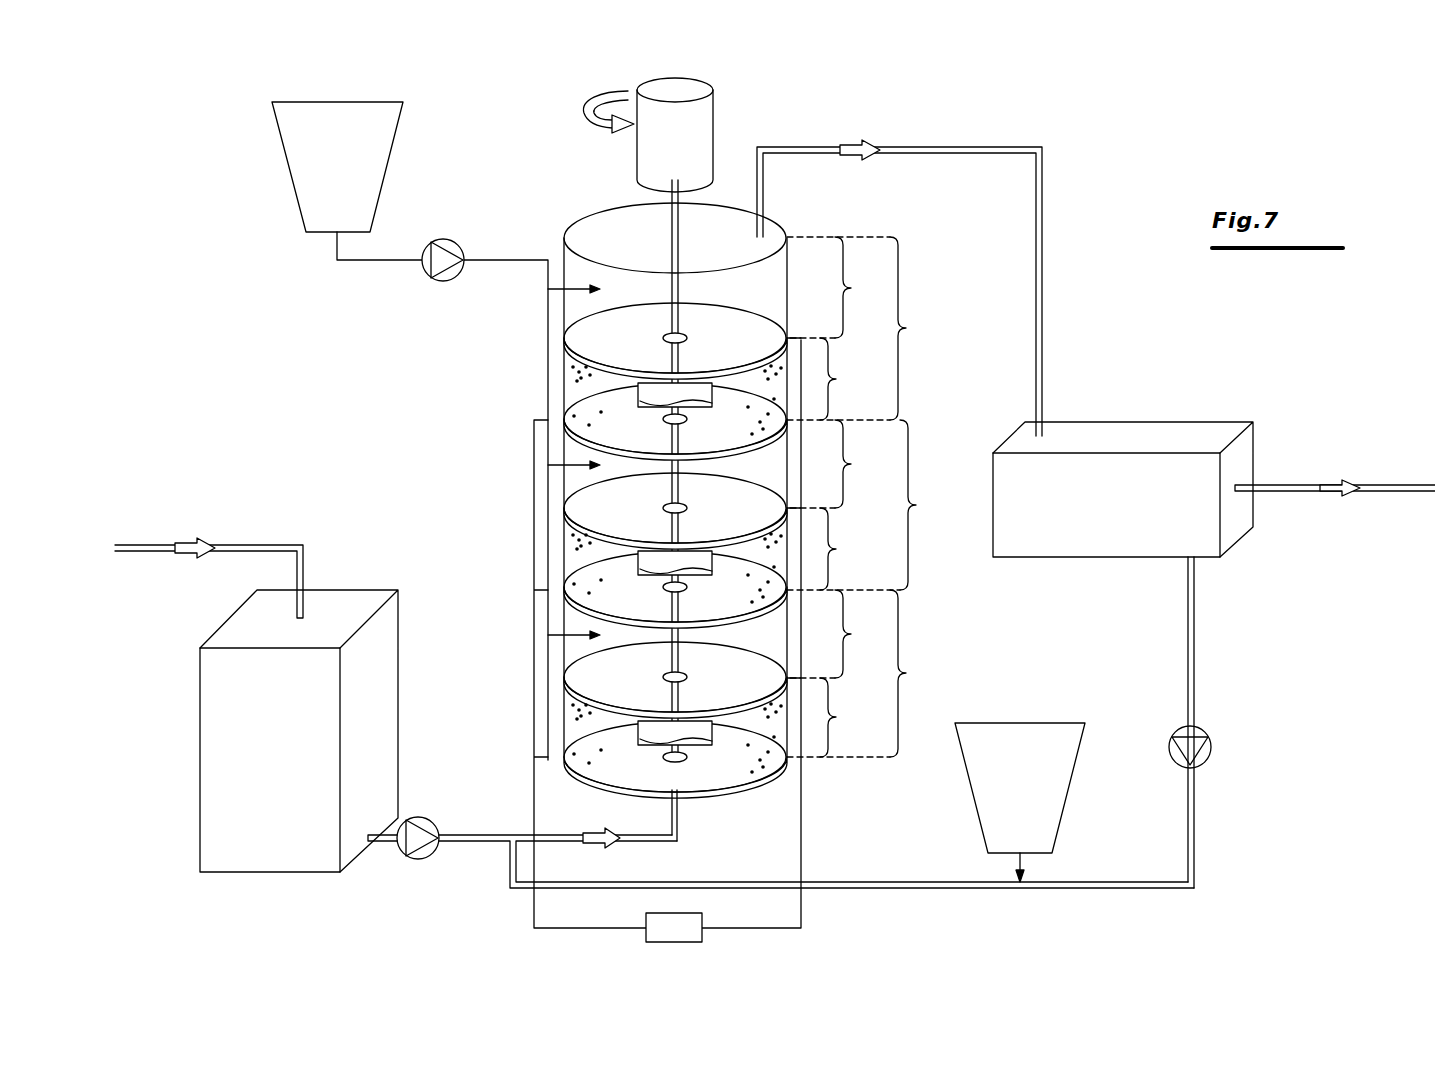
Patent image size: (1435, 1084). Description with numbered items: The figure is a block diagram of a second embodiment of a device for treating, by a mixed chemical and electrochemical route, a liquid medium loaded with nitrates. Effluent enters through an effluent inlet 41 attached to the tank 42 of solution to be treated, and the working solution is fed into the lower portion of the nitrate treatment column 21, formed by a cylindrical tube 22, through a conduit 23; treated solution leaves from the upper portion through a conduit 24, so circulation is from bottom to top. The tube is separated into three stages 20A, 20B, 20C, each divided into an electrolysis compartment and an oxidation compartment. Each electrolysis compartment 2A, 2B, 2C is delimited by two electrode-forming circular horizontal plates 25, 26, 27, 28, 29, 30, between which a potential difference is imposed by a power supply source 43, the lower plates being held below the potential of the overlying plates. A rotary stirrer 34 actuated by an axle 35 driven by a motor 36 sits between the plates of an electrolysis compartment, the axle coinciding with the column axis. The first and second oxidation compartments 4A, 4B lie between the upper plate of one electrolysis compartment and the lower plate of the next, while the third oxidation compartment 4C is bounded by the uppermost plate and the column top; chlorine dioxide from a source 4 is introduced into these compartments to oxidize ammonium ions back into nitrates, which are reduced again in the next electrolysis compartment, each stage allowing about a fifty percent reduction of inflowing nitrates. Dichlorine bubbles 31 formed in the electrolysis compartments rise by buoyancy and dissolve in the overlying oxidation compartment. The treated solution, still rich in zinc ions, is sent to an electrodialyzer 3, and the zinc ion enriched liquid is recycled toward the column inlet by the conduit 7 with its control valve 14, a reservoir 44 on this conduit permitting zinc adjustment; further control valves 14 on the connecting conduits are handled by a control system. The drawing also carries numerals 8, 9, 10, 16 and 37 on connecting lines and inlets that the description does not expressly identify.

The electrodialyzer 3 is at (1123, 489).
The ClO2 source 4 is at (337, 167).
The recycling conduit 7 is at (1195, 647).
The feed pipe 8 is at (452, 842).
The feed pipe 9 is at (506, 262).
The outlet pipe 10 is at (1277, 485).
The control valve 14 is at (441, 281).
The outlet pipe of tank 16 is at (384, 842).
The nitrate treatment column 21 is at (560, 232).
The cylindrical tube 22 is at (598, 222).
The conduit 23 is at (678, 826).
The conduit 24 is at (798, 147).
The electrode-forming circular horizontal plate 25 is at (675, 760).
The electrode-forming circular horizontal plate 26 is at (675, 680).
The electrode-forming circular horizontal plate 27 is at (675, 590).
The electrode-forming circular horizontal plate 28 is at (675, 511).
The electrode-forming circular horizontal plate 29 is at (675, 422).
The electrode-forming circular horizontal plate 30 is at (675, 341).
The dichlorine bubbles 31 is at (572, 368).
The rotary stirrer 34 is at (638, 401).
The axle 35 is at (680, 238).
The motor 36 is at (648, 135).
The inlet arrow / feed inlet 37 is at (554, 287).
The effluent inlet 41 is at (254, 548).
The tank 42 is at (299, 731).
The power supply source 43 is at (674, 927).
The reservoir 44 is at (1020, 802).
The electrolysis compartment 2A is at (841, 717).
The electrolysis compartment 2B is at (841, 549).
The electrolysis compartment 2C is at (841, 379).
The oxidation compartment 4A is at (856, 634).
The oxidation compartment 4B is at (856, 464).
The oxidation compartment 4C is at (856, 287).
The stage 20A is at (918, 673).
The stage 20B is at (928, 505).
The stage 20C is at (918, 328).